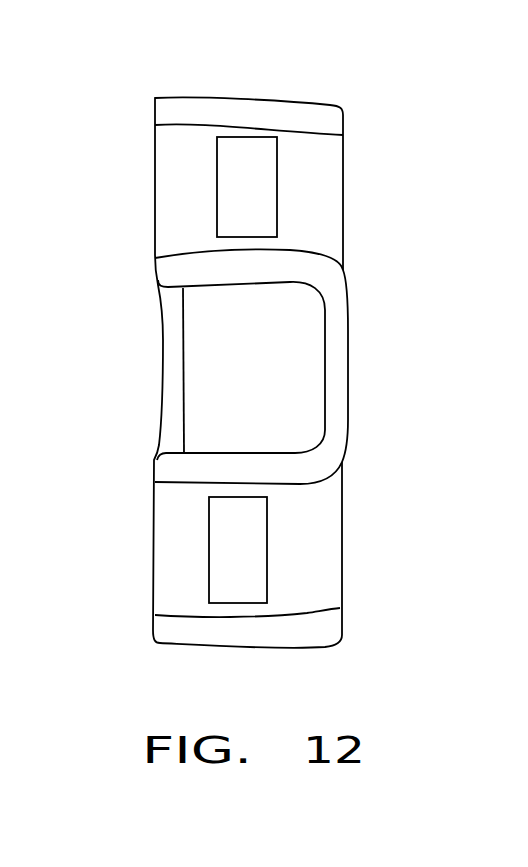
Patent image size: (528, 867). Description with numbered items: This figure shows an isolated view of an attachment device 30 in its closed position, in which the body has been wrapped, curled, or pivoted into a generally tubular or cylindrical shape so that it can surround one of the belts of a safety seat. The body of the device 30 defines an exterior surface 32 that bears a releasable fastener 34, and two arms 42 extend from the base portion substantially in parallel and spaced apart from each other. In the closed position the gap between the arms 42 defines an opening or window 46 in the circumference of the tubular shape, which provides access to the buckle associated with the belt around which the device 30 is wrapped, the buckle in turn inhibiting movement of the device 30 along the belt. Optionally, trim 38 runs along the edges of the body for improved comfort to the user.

The attachment device 30 is at (347, 188).
The exterior surface 32 is at (154, 188).
The releasable fastener 34 is at (248, 165).
The trim 38 is at (307, 467).
The arms 42 is at (175, 541).
The window 46 is at (275, 373).